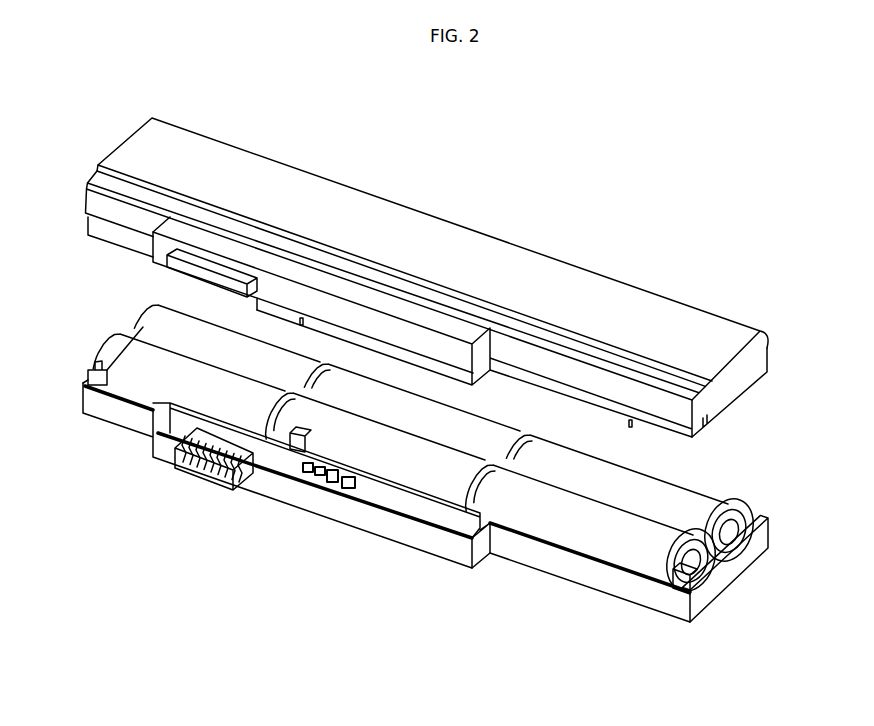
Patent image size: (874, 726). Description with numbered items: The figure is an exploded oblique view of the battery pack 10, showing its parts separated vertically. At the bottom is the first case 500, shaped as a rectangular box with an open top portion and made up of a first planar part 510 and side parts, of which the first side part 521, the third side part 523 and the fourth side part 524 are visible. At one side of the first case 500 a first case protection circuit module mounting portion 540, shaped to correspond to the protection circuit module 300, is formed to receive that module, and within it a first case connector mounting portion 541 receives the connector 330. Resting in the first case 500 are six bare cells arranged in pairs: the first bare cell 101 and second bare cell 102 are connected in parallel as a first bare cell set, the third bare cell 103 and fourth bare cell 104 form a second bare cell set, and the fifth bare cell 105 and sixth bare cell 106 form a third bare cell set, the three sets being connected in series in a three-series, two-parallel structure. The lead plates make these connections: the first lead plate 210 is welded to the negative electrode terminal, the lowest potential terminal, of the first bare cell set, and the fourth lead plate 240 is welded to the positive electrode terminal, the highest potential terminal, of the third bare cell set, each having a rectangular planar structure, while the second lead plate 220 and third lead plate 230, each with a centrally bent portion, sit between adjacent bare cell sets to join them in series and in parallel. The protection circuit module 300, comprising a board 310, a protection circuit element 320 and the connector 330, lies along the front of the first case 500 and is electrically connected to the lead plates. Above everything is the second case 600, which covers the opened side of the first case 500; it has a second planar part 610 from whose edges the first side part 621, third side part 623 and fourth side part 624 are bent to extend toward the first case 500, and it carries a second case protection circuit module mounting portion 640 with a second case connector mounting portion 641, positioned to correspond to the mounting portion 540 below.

The battery pack 10 is at (74, 98).
The second case 600 is at (776, 336).
The second planar part 610 is at (445, 232).
The first side part of second case 621 is at (85, 196).
The third side part of second case 623 is at (733, 375).
The fourth side part of second case 624 is at (553, 357).
The second case protection circuit module mounting portion 640 is at (153, 250).
The second case connector mounting portion 641 is at (163, 268).
The first case 500 is at (776, 531).
The first planar part 510 is at (622, 598).
The first side part of first case 521 is at (82, 384).
The third side part of first case 523 is at (736, 573).
The fourth side part of first case 524 is at (578, 573).
The first case protection circuit module mounting portion 540 is at (456, 551).
The first case connector mounting portion 541 is at (183, 468).
The first lead plate 210 is at (678, 596).
The second lead plate 220 is at (491, 555).
The third lead plate 230 is at (296, 445).
The fourth lead plate 240 is at (90, 372).
The protection circuit module 300 is at (373, 577).
The board 310 is at (378, 500).
The protection circuit element 320 is at (330, 490).
The connector 330 is at (309, 478).
The first bare cell 101 is at (595, 531).
The second bare cell 102 is at (633, 501).
The third bare cell 103 is at (375, 427).
The fourth bare cell 104 is at (412, 397).
The fifth bare cell 105 is at (189, 366).
The sixth bare cell 106 is at (227, 333).